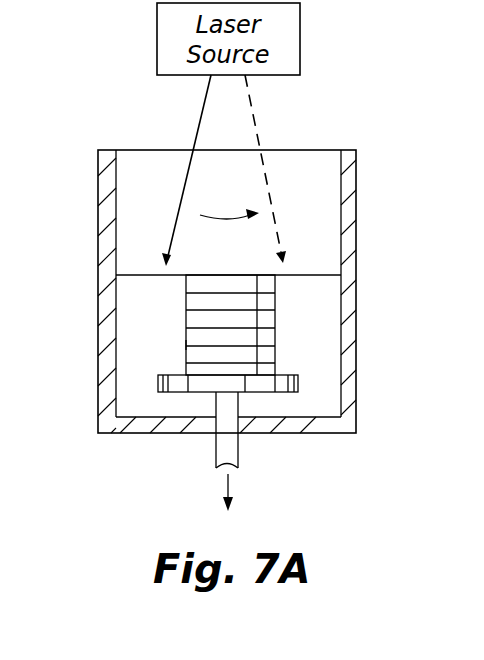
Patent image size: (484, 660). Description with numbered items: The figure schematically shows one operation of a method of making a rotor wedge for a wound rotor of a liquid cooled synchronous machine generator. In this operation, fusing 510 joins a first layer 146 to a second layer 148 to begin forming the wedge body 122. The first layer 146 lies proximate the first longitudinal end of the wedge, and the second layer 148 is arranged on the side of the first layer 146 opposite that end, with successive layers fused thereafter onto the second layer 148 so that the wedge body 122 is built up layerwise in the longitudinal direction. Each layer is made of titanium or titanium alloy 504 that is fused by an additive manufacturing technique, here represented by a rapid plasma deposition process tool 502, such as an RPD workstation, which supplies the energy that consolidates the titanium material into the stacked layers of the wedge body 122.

The rapid plasma deposition process tool 502 is at (370, 248).
The titanium or titanium alloy 504 is at (311, 393).
The fusing 510 is at (85, 122).
The wedge body 122 is at (287, 295).
The first layer 146 is at (187, 346).
The second layer 148 is at (186, 310).